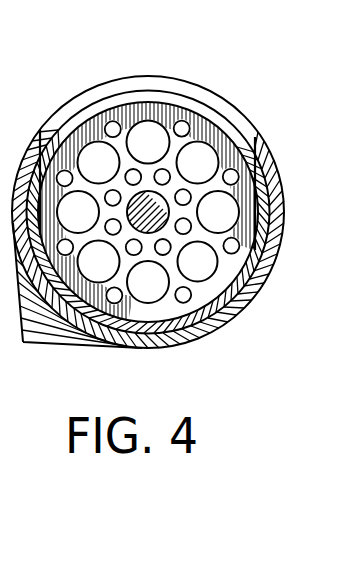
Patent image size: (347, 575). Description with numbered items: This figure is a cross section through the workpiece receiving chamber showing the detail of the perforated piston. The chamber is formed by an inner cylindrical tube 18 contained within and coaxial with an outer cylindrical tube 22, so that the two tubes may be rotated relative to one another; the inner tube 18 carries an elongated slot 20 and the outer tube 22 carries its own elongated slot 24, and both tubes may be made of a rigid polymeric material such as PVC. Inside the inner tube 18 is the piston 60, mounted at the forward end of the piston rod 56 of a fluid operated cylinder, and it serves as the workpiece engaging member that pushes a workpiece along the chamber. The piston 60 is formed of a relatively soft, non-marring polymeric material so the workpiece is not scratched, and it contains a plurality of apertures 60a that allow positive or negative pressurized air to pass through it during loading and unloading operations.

The inner cylindrical tube 18 is at (193, 323).
The elongated slot 20 is at (207, 106).
The outer cylindrical tube 22 is at (116, 340).
The elongated slot 24 is at (136, 79).
The piston rod 56 is at (158, 220).
The piston 60 is at (100, 127).
The apertures 60a is at (190, 326).